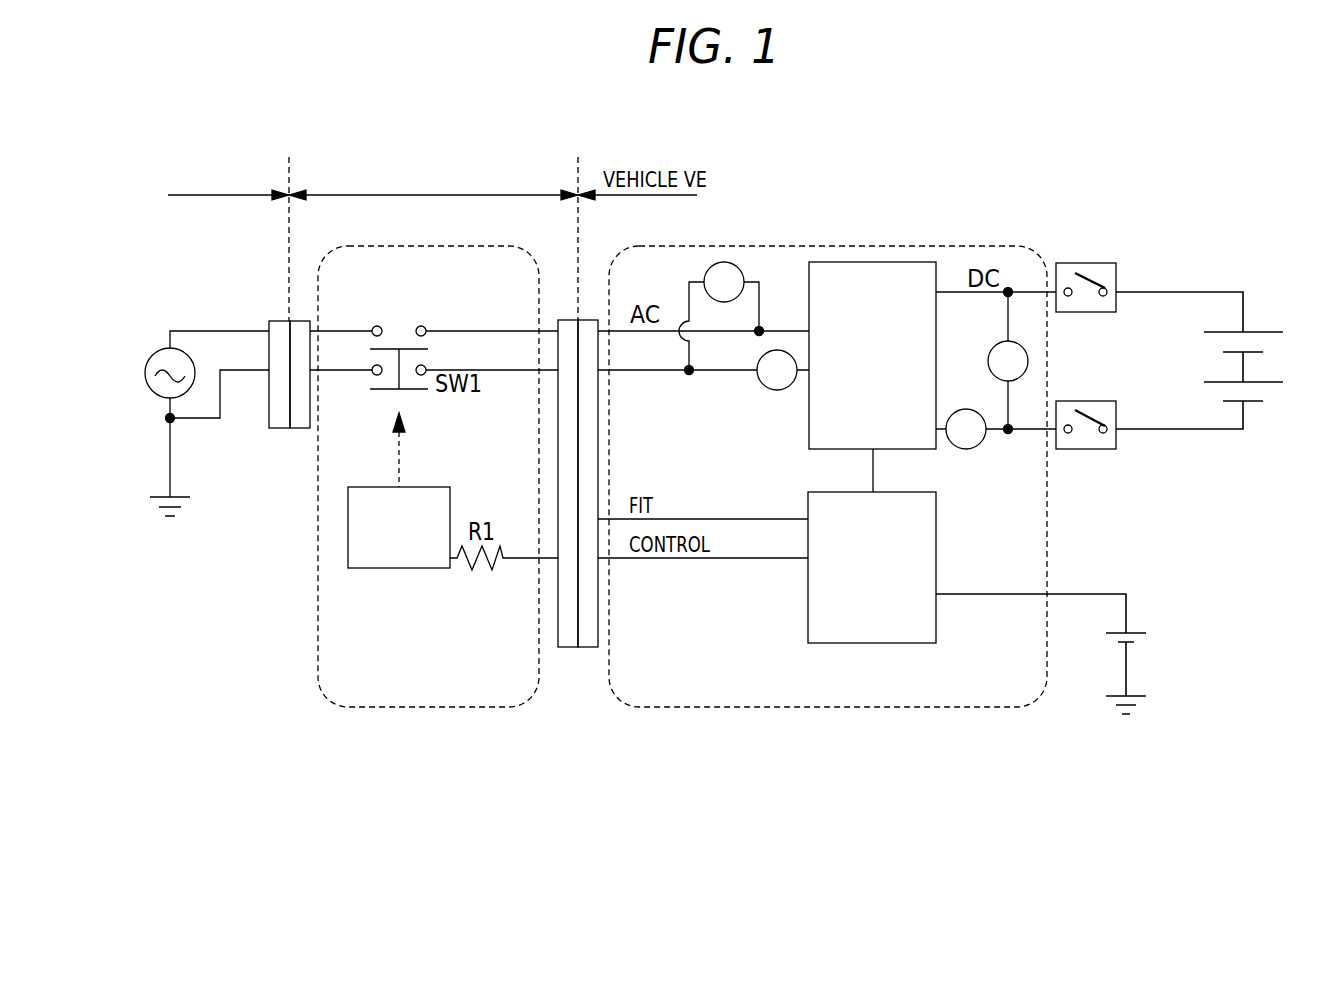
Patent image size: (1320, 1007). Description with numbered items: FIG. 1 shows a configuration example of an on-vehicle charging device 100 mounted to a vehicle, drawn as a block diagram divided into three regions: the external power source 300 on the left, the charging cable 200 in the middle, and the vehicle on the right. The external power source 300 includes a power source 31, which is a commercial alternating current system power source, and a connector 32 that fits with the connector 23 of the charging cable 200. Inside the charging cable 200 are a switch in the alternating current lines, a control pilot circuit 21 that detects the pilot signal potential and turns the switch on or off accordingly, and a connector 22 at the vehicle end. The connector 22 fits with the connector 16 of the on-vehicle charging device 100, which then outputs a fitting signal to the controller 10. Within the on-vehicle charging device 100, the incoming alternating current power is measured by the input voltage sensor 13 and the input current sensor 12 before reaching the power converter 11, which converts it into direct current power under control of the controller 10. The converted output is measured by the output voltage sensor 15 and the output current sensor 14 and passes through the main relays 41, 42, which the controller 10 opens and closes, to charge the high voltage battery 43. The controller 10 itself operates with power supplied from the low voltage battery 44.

The controller 10 is at (808, 594).
The power converter 11 is at (809, 440).
The input current sensor 12 is at (773, 391).
The input voltage sensor 13 is at (742, 272).
The output current sensor 14 is at (968, 450).
The output voltage sensor 15 is at (993, 347).
The connector 16 is at (591, 320).
The control pilot circuit 21 is at (368, 487).
The connector 22 is at (565, 320).
The connector 23 is at (294, 428).
The power source 31 is at (152, 355).
The connector 32 is at (281, 321).
The main relay 41 is at (1086, 263).
The main relay 42 is at (1086, 401).
The high voltage battery 43 is at (1268, 332).
The low voltage battery 44 is at (1132, 632).
The on-vehicle charging device 100 is at (962, 246).
The charging cable 200 is at (433, 437).
The external power source 300 is at (187, 171).